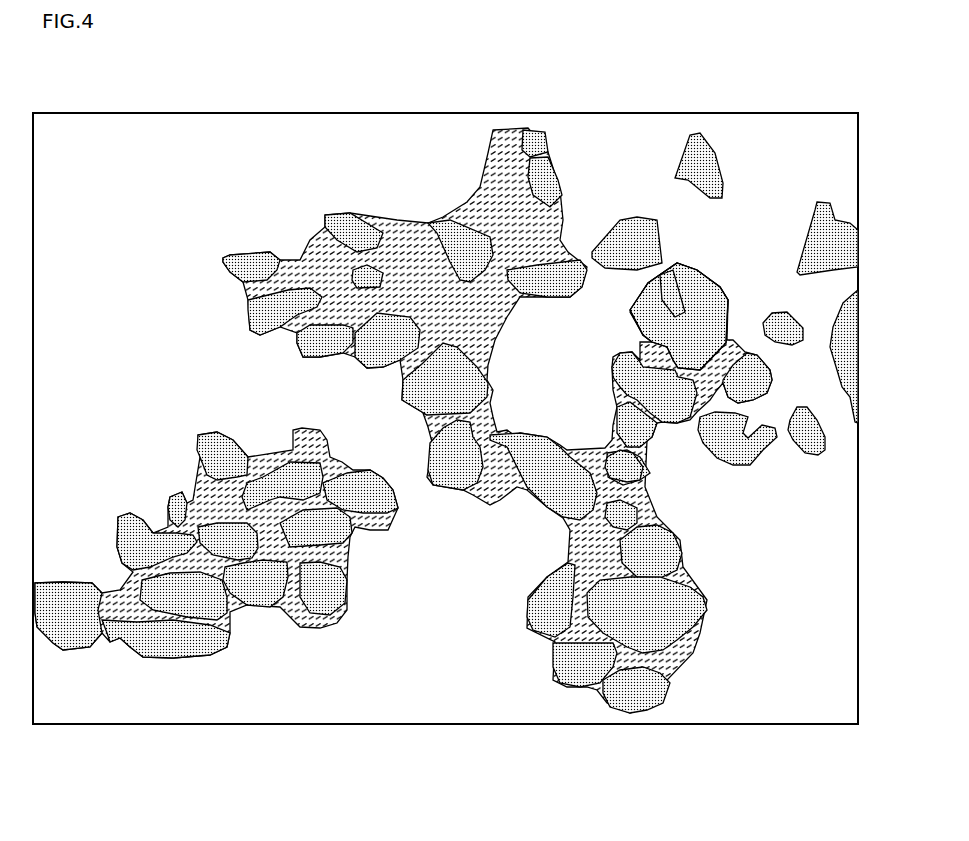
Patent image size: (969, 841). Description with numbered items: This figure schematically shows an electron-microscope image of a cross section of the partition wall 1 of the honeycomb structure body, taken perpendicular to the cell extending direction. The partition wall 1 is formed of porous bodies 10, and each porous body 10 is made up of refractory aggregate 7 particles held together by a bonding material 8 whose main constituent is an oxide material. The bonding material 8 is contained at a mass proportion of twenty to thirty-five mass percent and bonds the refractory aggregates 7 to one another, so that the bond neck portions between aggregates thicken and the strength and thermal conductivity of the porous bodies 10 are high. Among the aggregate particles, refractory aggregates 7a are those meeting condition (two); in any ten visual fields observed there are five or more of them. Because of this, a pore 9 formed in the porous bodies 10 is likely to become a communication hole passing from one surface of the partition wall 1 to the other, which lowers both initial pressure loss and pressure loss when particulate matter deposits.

The partition wall 1 is at (710, 263).
The porous body 10 is at (679, 316).
The refractory aggregate 7 is at (627, 697).
The refractory aggregate meeting condition (2) 7a is at (290, 540).
The bonding material 8 is at (514, 430).
The pore 9 is at (402, 643).